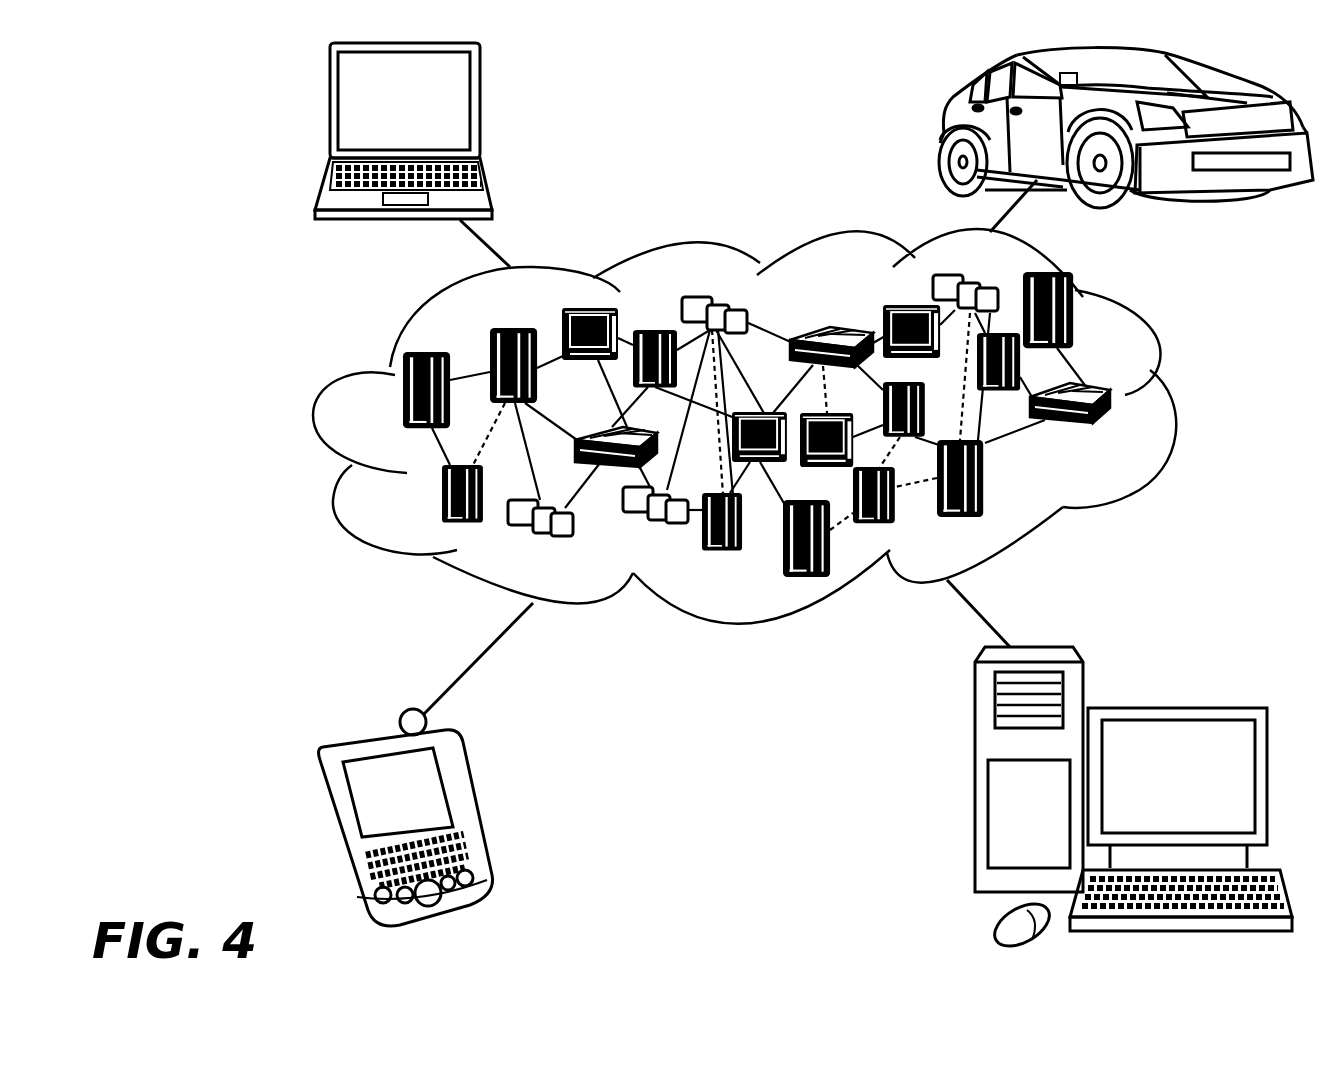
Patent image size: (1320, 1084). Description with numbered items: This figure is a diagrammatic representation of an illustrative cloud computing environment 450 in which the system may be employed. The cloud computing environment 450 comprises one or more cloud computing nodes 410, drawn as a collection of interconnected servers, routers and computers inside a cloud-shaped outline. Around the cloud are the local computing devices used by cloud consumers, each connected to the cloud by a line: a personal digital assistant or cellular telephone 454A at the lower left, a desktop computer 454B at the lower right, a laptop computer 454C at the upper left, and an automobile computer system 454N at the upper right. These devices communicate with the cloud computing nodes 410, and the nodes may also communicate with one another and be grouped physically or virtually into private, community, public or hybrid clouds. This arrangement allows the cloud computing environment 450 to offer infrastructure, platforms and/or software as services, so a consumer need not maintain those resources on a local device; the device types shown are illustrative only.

The cloud computing nodes 410 is at (823, 424).
The cloud computing environment 450 is at (1180, 397).
The personal digital assistant (PDA) or cellular telephone 454A is at (468, 810).
The desktop computer 454B is at (1176, 708).
The laptop computer 454C is at (483, 109).
The automobile computer system 454N is at (942, 128).